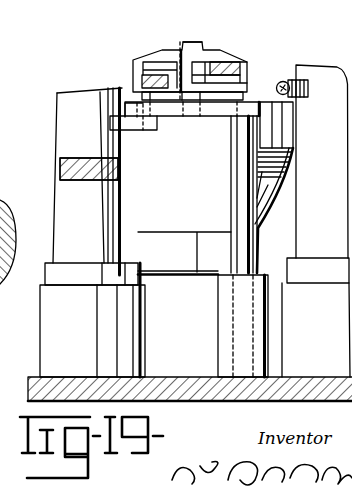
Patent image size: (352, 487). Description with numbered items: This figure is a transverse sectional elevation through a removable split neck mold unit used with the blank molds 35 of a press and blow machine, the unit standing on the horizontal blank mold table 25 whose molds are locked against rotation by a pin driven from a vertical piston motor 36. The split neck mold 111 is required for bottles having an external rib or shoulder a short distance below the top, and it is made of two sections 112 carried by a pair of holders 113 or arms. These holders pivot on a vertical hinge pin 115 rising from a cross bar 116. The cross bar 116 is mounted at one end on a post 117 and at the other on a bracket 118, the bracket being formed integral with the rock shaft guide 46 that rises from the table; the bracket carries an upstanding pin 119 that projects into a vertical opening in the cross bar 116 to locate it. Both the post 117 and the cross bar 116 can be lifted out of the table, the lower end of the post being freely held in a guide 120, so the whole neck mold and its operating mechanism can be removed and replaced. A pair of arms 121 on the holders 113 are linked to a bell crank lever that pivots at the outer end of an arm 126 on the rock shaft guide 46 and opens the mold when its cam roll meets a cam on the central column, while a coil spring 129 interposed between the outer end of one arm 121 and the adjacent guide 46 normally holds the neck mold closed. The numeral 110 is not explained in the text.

The blank mold table 25 is at (251, 392).
The blank molds 35 is at (6, 306).
The vertical piston motor 36 is at (6, 117).
The vertical guide 46 is at (62, 236).
The base 110 is at (10, 367).
The split neck mold 111 is at (131, 68).
The sections 112 is at (9, 234).
The holders 113 is at (9, 143).
The vertical hinge pin 115 is at (197, 42).
The cross bar 116 is at (226, 112).
The post 117 is at (240, 173).
The bracket 118 is at (141, 131).
The upstanding pin 119 is at (137, 104).
The guide 120 is at (225, 322).
The arms 121 is at (145, 72).
The arm 126 is at (83, 157).
The coil spring 129 is at (295, 66).